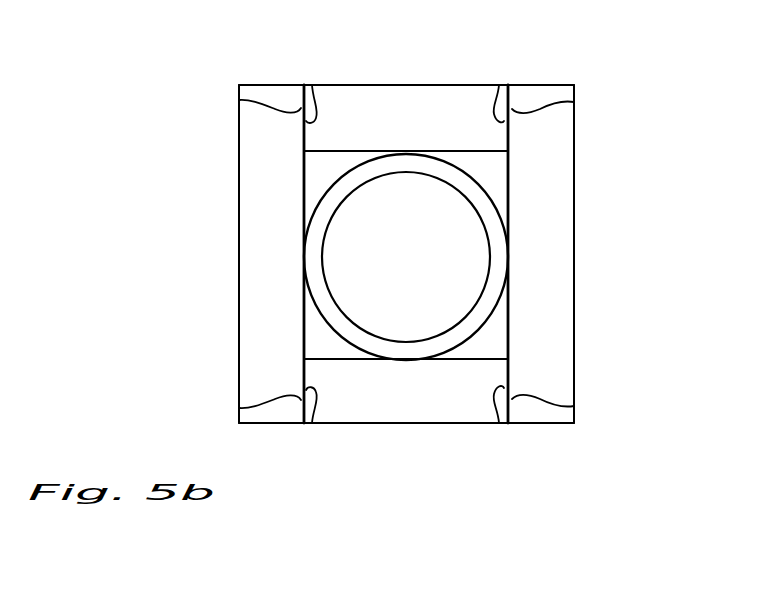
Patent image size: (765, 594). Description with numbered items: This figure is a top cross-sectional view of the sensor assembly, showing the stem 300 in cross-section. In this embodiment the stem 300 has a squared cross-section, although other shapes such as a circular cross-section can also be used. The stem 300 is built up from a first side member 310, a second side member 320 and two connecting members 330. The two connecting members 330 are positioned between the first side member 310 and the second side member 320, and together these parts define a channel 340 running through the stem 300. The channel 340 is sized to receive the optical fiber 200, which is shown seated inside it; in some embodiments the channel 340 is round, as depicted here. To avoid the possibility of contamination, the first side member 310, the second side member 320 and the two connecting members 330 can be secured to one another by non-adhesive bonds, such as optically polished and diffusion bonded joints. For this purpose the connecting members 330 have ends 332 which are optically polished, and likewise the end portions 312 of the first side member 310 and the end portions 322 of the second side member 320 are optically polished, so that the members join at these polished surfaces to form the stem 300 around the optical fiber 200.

The stem 300 is at (220, 166).
The first side member 310 is at (257, 232).
The second side member 320 is at (556, 231).
The end portions of the first side member 312 is at (239, 100).
The end portions of the second side member 322 is at (574, 102).
The connecting members 330 is at (402, 106).
The ends of the connecting members 332 is at (312, 85).
The channel 340 is at (489, 340).
The optical fiber 200 is at (494, 181).